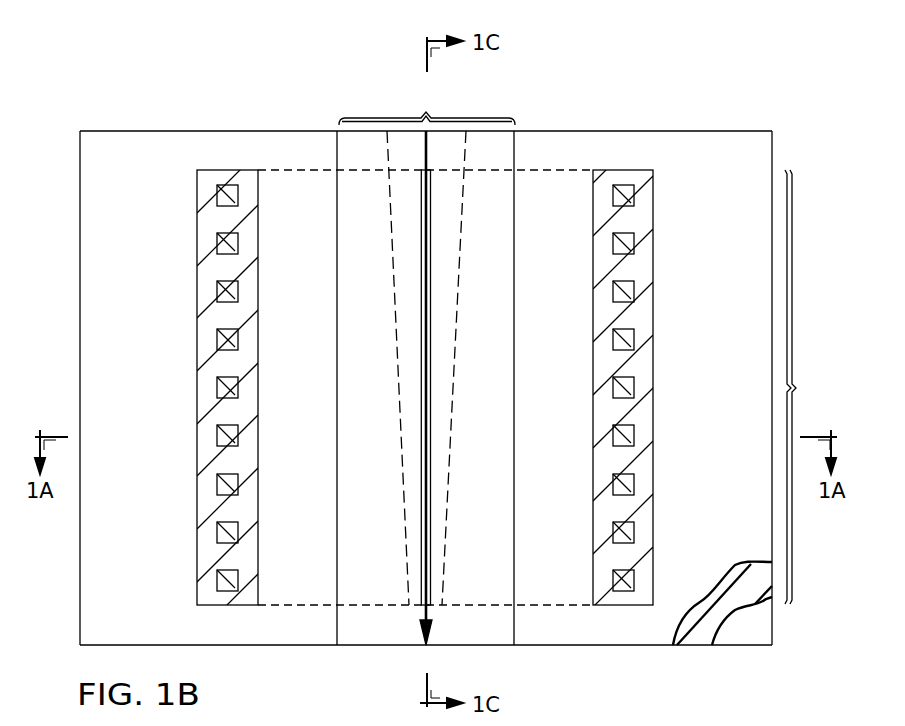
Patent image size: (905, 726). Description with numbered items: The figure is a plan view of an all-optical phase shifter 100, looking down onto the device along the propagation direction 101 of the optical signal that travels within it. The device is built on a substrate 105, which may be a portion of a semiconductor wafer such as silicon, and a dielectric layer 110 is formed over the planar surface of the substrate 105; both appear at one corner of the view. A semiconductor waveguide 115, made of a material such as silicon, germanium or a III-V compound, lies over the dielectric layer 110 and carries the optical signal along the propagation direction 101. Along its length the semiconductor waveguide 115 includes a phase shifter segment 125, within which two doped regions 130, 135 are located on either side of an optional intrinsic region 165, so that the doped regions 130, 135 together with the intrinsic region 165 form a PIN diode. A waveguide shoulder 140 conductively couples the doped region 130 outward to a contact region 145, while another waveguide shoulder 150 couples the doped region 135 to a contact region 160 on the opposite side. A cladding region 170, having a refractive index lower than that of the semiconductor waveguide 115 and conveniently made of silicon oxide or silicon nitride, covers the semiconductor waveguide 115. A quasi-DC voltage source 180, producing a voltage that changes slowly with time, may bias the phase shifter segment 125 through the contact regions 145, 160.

The all-optical phase shifter 100 is at (740, 103).
The propagation direction 101 is at (420, 612).
The substrate 105 is at (755, 646).
The dielectric layer 110 is at (695, 646).
The semiconductor waveguide 115 is at (427, 103).
The phase shifter segment 125 is at (812, 387).
The doped region 130 is at (509, 318).
The doped region 135 is at (343, 318).
The waveguide shoulder 140 is at (553, 168).
The contact region 145 is at (646, 366).
The waveguide shoulder 150 is at (297, 168).
The contact region 160 is at (197, 390).
The intrinsic region 165 is at (421, 596).
The cladding region 170 is at (227, 138).
The quasi-DC voltage source 180 is at (458, 275).